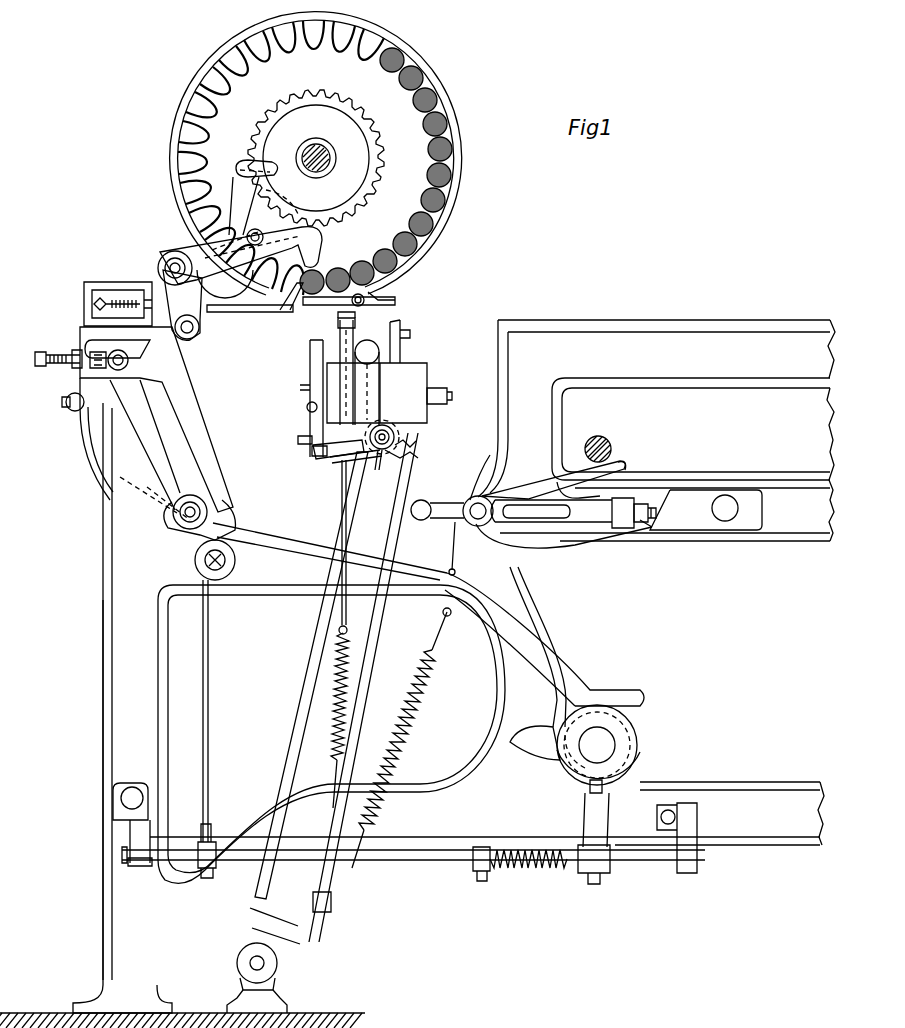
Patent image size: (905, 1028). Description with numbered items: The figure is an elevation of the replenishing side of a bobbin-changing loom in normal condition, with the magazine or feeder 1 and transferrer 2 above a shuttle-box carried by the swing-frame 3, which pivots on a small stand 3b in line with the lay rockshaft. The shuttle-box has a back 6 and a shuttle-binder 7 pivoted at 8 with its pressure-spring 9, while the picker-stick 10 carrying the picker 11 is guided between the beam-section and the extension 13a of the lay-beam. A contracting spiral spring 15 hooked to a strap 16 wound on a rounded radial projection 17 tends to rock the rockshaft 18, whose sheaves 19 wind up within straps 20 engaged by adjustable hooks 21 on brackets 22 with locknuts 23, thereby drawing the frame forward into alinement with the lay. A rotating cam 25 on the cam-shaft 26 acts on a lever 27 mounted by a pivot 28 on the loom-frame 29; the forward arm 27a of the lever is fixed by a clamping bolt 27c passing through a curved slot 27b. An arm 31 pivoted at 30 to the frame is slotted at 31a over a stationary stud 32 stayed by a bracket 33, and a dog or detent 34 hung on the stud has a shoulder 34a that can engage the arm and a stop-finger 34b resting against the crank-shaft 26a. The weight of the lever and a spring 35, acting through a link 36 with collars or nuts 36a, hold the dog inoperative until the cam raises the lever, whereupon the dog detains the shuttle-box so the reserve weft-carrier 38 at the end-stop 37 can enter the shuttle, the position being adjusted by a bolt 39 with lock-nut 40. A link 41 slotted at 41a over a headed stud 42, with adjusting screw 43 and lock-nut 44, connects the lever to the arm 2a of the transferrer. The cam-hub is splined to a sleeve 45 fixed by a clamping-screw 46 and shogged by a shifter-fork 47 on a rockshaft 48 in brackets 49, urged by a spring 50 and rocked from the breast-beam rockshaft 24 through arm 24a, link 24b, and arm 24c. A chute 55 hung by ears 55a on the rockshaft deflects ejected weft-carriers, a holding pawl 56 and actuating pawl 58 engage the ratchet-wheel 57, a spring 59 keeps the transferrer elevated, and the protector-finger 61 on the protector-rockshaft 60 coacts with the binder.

The magazine or feeder 1 is at (462, 180).
The transferrer 2 is at (322, 248).
The downwardly extending arm of the transferrer 2a is at (166, 316).
The shuttle-box frame 3 is at (380, 640).
The small stand 3b is at (238, 970).
The shuttle-box back 6 is at (410, 336).
The shuttle-binder 7 is at (360, 340).
The pivot of the shuttle-binder 8 is at (340, 322).
The pressure-spring 9 is at (352, 352).
The picker-stick 10 is at (300, 678).
The picker 11 is at (402, 328).
The extension of the lay-beam 13a is at (312, 372).
The contracting spiral spring 15 is at (336, 714).
The strap 16 is at (350, 482).
The rounded radial projection 17 is at (377, 393).
The rockshaft 18 is at (398, 437).
The sheaves 19 is at (378, 452).
The straps 20 is at (340, 464).
The hooks 21 is at (320, 460).
The brackets 22 is at (305, 436).
The locknuts 23 is at (312, 450).
The breast-beam rockshaft 24 is at (68, 412).
The arm 24a is at (84, 462).
The link or connecting-rod 24b is at (210, 722).
The arm 24c is at (210, 832).
The rotating cam 25 is at (520, 762).
The cam-shaft 26 is at (603, 746).
The crank-shaft 26a is at (598, 435).
The lever 27 is at (302, 590).
The forward arm of the lever 27a is at (151, 487).
The curved slot 27b is at (178, 536).
The clamping bolt 27c is at (198, 498).
The pivot 28 is at (200, 566).
The loom-frame 29 is at (103, 703).
The pivotal connection of the arm 30 is at (464, 476).
The arm 31 is at (505, 497).
The slot 31a is at (558, 522).
The guide-pin or stud 32 is at (481, 524).
The bracket 33 is at (617, 548).
The dog or detent 34 is at (548, 487).
The shoulder 34a is at (585, 492).
The stop-finger 34b is at (625, 462).
The contracting spiral spring 35 is at (418, 747).
The link 36 is at (452, 560).
The collars or nuts 36a is at (468, 503).
The end-stop or weft-carrier guide 37 is at (283, 311).
The reserve weft-carrier 38 is at (322, 280).
The bolt 39 is at (648, 506).
The lock-nut 40 is at (638, 535).
The link 41 is at (160, 362).
The slot 41a is at (112, 352).
The headed stud 42 is at (145, 445).
The adjusting screw 43 is at (70, 366).
The lock-nut 44 is at (74, 352).
The sleeve 45 is at (612, 735).
The clamping-screw 46 is at (592, 793).
The shifter-fork 47 is at (641, 776).
The rockshaft 48 is at (428, 864).
The stands or brackets 49 is at (140, 868).
The spring 50 is at (510, 874).
The chute or deflector 55 is at (405, 457).
The ears 55a is at (420, 442).
The detent or holding pawl 56 is at (243, 165).
The ratchet-wheel 57 is at (294, 100).
The actuating pawl 58 is at (262, 232).
The spring 59 is at (168, 254).
The protector-rockshaft 60 is at (307, 407).
The protector-finger 61 is at (310, 387).